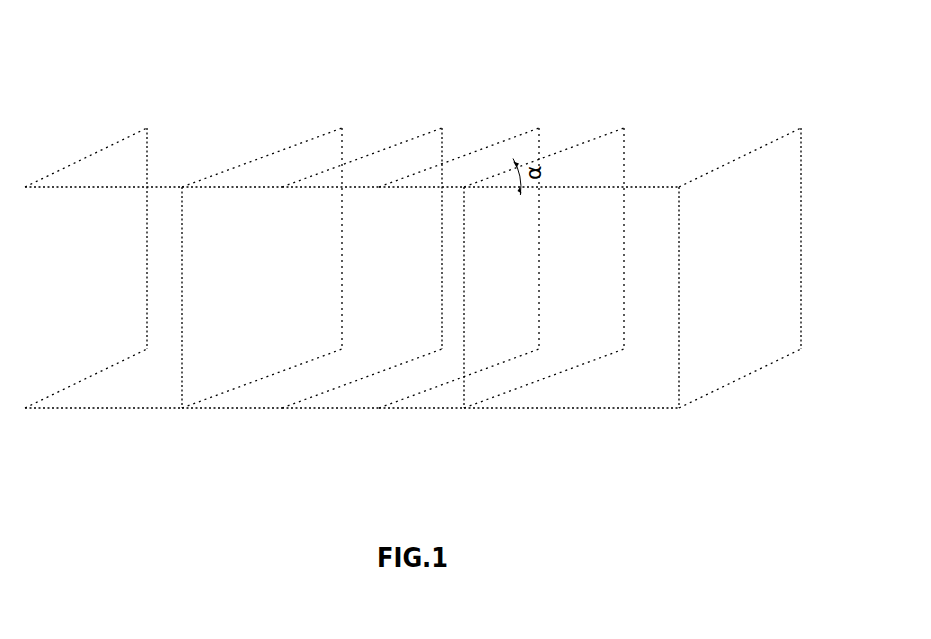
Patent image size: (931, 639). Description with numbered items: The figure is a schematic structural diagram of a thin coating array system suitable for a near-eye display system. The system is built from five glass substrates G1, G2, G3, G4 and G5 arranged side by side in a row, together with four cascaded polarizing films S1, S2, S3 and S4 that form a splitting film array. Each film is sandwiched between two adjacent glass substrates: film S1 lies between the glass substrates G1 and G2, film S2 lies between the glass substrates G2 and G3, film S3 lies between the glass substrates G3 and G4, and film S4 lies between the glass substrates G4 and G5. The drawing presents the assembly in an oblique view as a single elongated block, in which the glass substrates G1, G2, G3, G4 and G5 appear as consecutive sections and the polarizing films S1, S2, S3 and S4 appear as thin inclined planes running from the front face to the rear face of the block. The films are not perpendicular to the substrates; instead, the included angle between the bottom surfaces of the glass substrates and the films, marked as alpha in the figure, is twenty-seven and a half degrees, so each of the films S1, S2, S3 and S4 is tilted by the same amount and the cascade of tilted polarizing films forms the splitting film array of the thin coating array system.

The glass substrate G1 is at (586, 410).
The glass substrate G2 is at (427, 410).
The glass substrate G3 is at (331, 410).
The glass substrate G4 is at (233, 410).
The glass substrate G5 is at (111, 410).
The polarizing film S1 is at (570, 148).
The polarizing film S2 is at (478, 150).
The polarizing film S3 is at (379, 150).
The polarizing film S4 is at (278, 150).